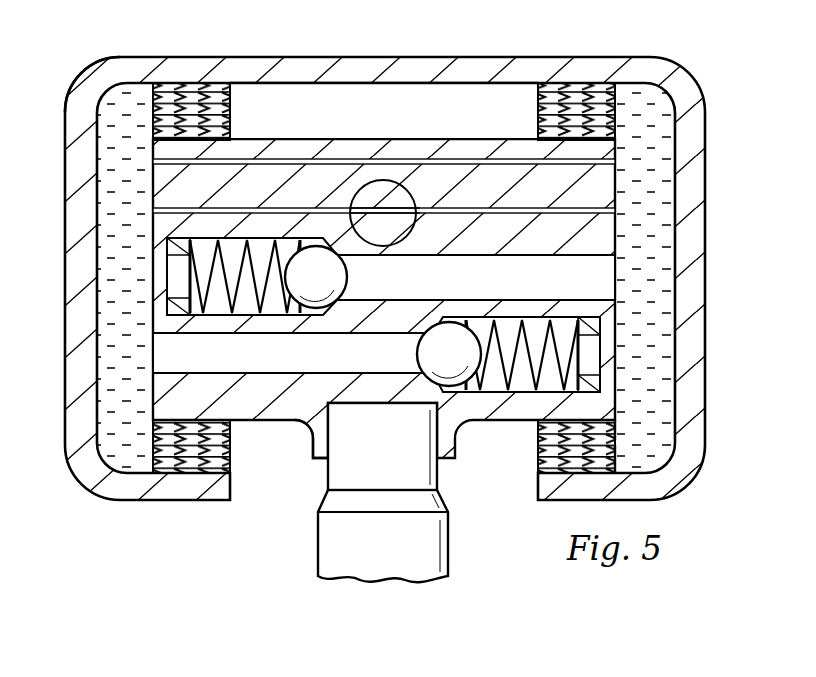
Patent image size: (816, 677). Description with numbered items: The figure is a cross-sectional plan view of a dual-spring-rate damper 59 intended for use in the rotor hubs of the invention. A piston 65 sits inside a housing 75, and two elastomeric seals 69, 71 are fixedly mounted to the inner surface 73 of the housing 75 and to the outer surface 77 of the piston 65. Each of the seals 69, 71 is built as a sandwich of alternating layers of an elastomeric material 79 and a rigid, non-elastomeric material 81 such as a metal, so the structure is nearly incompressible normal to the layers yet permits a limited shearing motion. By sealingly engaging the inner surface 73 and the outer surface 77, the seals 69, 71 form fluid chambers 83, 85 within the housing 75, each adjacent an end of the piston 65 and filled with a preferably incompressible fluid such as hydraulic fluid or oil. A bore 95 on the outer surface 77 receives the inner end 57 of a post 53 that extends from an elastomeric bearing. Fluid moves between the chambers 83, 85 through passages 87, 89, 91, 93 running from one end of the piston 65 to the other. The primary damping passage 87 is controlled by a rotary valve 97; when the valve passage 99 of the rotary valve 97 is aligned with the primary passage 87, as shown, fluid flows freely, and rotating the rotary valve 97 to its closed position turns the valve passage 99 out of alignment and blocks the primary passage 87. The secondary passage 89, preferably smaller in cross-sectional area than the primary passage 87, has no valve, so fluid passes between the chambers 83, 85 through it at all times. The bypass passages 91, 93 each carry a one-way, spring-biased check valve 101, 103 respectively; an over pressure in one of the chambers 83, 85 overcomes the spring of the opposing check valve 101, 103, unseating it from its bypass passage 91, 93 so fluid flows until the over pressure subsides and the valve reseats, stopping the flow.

The post 53 is at (318, 545).
The inner end 57 is at (397, 460).
The damper 59 is at (86, 52).
The piston 65 is at (318, 132).
The elastomeric seal 69 is at (528, 451).
The elastomeric seal 71 is at (142, 458).
The inner surface 73 is at (446, 88).
The housing 75 is at (706, 190).
The outer surface 77 is at (478, 138).
The elastomeric material 79 is at (628, 453).
The rigid non-elastomeric material 81 is at (622, 425).
The fluid chamber 83 is at (660, 336).
The fluid chamber 85 is at (137, 333).
The primary damping passage 87 is at (618, 215).
The secondary passage 89 is at (158, 165).
The bypass passage 91 is at (567, 291).
The bypass passage 93 is at (285, 370).
The bore 95 is at (336, 424).
The rotary valve 97 is at (413, 210).
The valve passage 99 is at (383, 213).
The check valve 101 is at (344, 278).
The check valve 103 is at (420, 353).